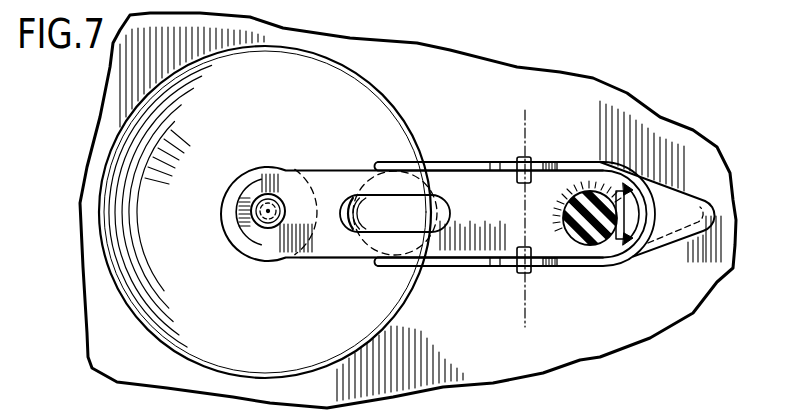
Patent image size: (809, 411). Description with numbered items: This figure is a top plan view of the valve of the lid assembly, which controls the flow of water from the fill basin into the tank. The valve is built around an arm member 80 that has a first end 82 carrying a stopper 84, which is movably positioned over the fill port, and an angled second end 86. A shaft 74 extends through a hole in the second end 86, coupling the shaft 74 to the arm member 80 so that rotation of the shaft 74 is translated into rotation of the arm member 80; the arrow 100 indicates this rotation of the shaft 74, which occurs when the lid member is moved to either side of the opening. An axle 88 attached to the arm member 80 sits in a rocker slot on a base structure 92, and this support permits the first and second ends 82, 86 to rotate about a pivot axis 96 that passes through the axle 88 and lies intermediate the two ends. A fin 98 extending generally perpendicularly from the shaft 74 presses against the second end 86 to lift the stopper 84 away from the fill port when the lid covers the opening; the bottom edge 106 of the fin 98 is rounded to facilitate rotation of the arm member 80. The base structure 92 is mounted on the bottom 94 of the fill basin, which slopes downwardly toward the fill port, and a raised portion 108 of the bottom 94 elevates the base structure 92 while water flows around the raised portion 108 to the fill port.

The shaft 74 is at (580, 245).
The arm member 80 is at (322, 182).
The first end 82 is at (247, 172).
The stopper 84 is at (241, 256).
The second end 86 is at (648, 266).
The axle 88 is at (517, 158).
The base structure 92 is at (490, 162).
The bottom 94 is at (492, 363).
The pivot axis 96 is at (525, 124).
The fin 98 is at (620, 242).
The arrow 100 is at (643, 212).
The bottom edge 106 is at (620, 182).
The raised portion 108 is at (430, 267).